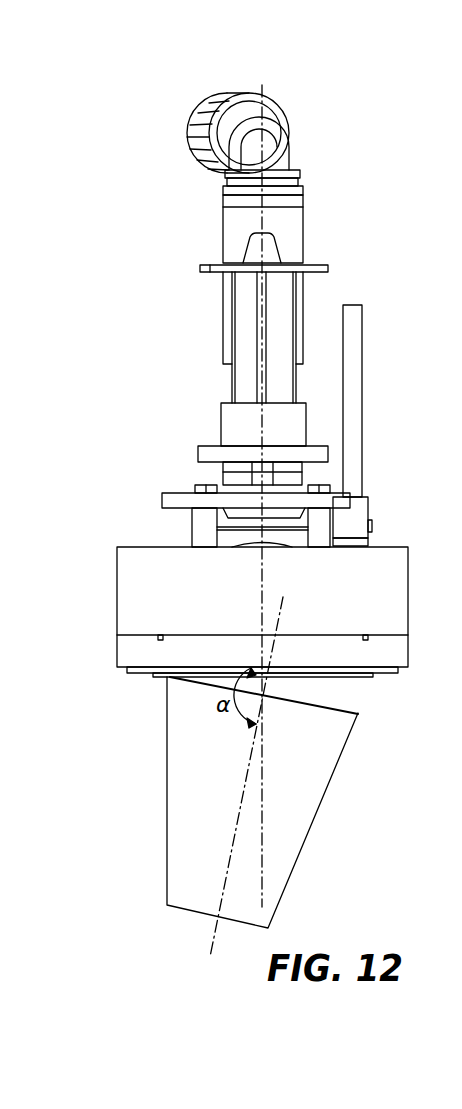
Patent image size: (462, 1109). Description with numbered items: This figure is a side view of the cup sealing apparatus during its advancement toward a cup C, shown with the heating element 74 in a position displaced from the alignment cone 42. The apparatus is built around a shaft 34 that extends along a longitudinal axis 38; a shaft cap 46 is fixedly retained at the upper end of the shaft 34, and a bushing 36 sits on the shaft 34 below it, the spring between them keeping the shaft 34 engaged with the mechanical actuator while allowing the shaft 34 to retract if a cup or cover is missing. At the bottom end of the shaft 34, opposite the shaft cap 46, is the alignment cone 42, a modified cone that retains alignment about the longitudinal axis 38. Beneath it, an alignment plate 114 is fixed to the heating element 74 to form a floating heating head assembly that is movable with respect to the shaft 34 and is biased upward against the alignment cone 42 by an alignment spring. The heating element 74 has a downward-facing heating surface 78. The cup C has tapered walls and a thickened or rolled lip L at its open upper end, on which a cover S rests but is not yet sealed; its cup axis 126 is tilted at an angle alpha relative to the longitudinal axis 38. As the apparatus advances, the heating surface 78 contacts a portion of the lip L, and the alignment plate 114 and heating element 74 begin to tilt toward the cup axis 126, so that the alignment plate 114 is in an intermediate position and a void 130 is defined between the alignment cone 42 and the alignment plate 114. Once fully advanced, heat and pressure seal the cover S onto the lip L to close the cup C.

The longitudinal axis 38 is at (264, 141).
The shaft cap 46 is at (197, 268).
The shaft 34 is at (242, 332).
The bushing 36 is at (237, 422).
The alignment plate 114 is at (188, 500).
The void 130 is at (177, 527).
The alignment cone 42 is at (288, 518).
The heating element 74 is at (132, 617).
The heating surface 78 is at (372, 675).
The cup axis 126 is at (217, 927).
The cup C is at (308, 833).
The lip L is at (358, 713).
The cover S is at (328, 710).